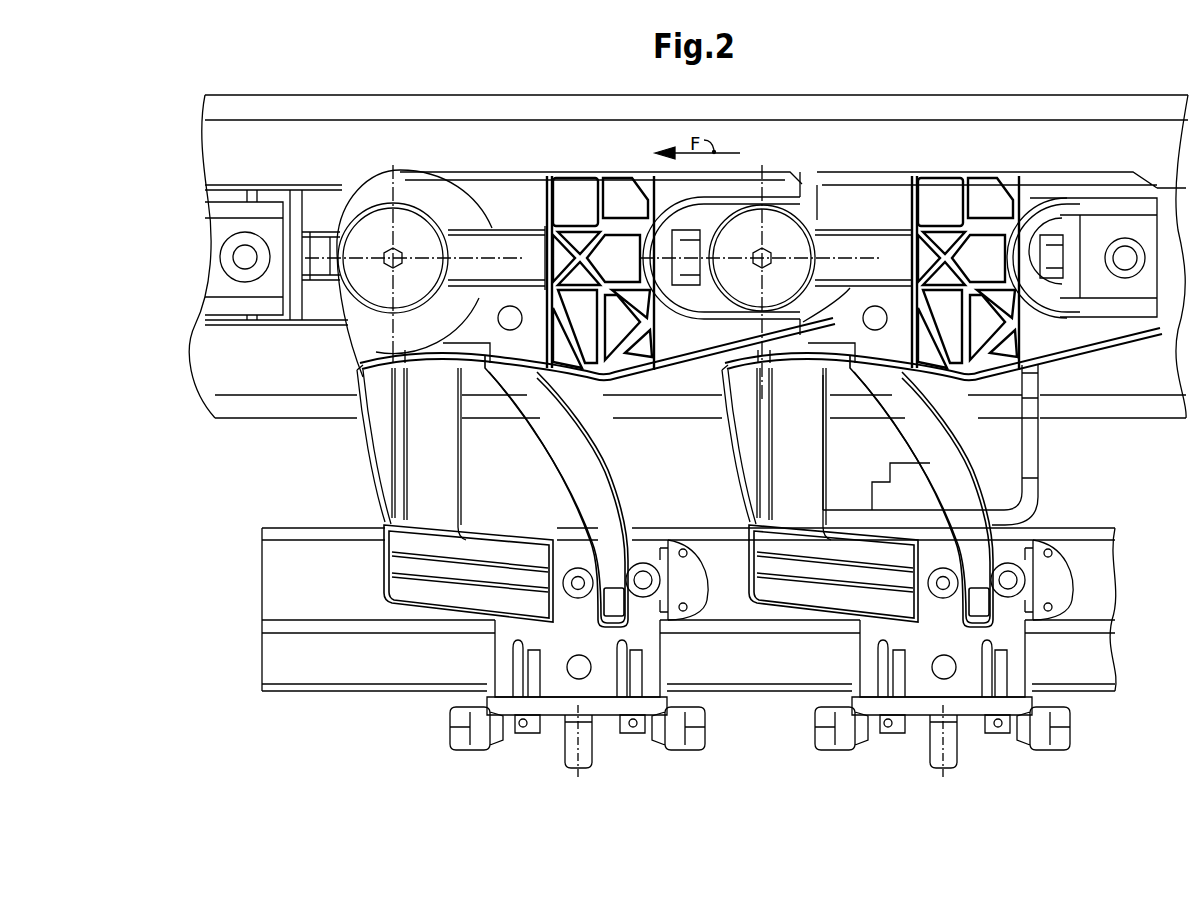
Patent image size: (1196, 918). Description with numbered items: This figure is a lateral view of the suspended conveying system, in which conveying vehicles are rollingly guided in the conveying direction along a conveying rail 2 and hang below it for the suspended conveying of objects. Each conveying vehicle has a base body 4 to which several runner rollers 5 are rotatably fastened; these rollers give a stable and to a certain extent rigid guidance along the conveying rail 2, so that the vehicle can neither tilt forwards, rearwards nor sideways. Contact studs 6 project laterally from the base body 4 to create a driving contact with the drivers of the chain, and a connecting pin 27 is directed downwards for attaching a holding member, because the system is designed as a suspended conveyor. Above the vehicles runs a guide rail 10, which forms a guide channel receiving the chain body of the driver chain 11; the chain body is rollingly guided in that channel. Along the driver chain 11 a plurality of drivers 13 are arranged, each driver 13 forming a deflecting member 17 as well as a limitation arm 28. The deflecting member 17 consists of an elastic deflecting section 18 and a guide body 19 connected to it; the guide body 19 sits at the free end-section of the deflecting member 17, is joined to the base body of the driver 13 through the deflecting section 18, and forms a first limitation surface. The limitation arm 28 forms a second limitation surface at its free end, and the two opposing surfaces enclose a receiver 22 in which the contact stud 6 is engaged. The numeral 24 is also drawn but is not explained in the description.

The conveying rail 2 is at (272, 578).
The base body 4 is at (578, 586).
The runner rollers 5 is at (612, 715).
The contact studs 6 is at (563, 617).
The guide rail 10 is at (210, 152).
The driver chain 11 is at (852, 172).
The driver 13 is at (545, 172).
The deflecting member 17 is at (378, 463).
The elastic deflecting section 18 is at (420, 424).
The guide body 19 is at (408, 588).
The receiver 22 is at (580, 683).
The link end 24 is at (1040, 216).
The connecting pin 27 is at (581, 760).
The limitation arm 28 is at (600, 457).